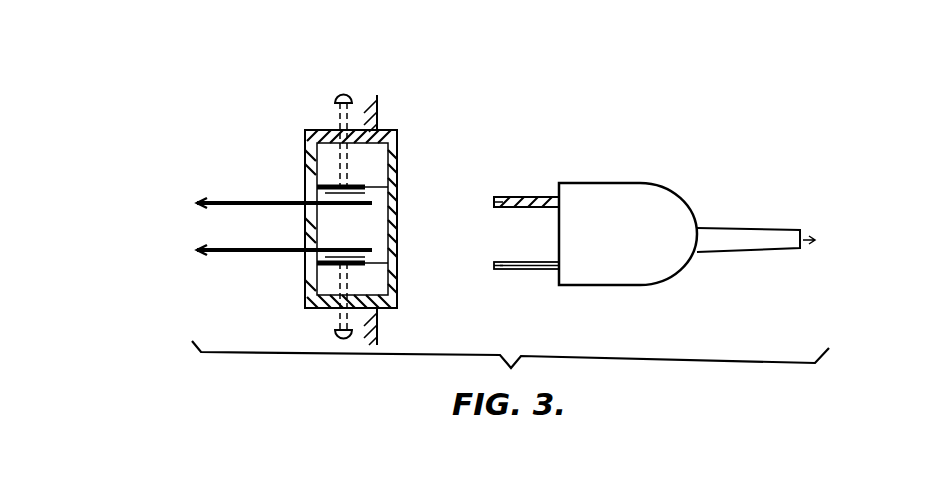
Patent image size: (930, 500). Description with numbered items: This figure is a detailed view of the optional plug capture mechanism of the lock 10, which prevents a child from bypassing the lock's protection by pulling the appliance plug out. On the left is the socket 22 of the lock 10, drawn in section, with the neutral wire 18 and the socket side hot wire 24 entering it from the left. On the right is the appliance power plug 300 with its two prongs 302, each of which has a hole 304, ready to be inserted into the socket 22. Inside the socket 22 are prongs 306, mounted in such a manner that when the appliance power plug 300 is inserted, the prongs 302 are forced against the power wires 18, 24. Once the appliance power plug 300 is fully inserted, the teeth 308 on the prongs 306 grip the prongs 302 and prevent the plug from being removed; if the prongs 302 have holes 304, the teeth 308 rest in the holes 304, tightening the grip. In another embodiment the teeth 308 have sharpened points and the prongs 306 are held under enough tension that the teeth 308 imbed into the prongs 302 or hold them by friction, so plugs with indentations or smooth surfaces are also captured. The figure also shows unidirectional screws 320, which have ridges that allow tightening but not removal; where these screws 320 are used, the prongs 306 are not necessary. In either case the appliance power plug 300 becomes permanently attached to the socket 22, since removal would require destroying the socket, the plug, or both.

The lock 10 is at (380, 108).
The socket 22 is at (397, 148).
The socket side hot wire 24 is at (252, 202).
The neutral wire 18 is at (253, 249).
The prongs 306 is at (334, 187).
The teeth 308 is at (352, 192).
The unidirectional screws 320 is at (338, 97).
The appliance power plug 300 is at (651, 183).
The prongs of the appliance power plug 302 is at (545, 196).
The holes 304 is at (519, 196).